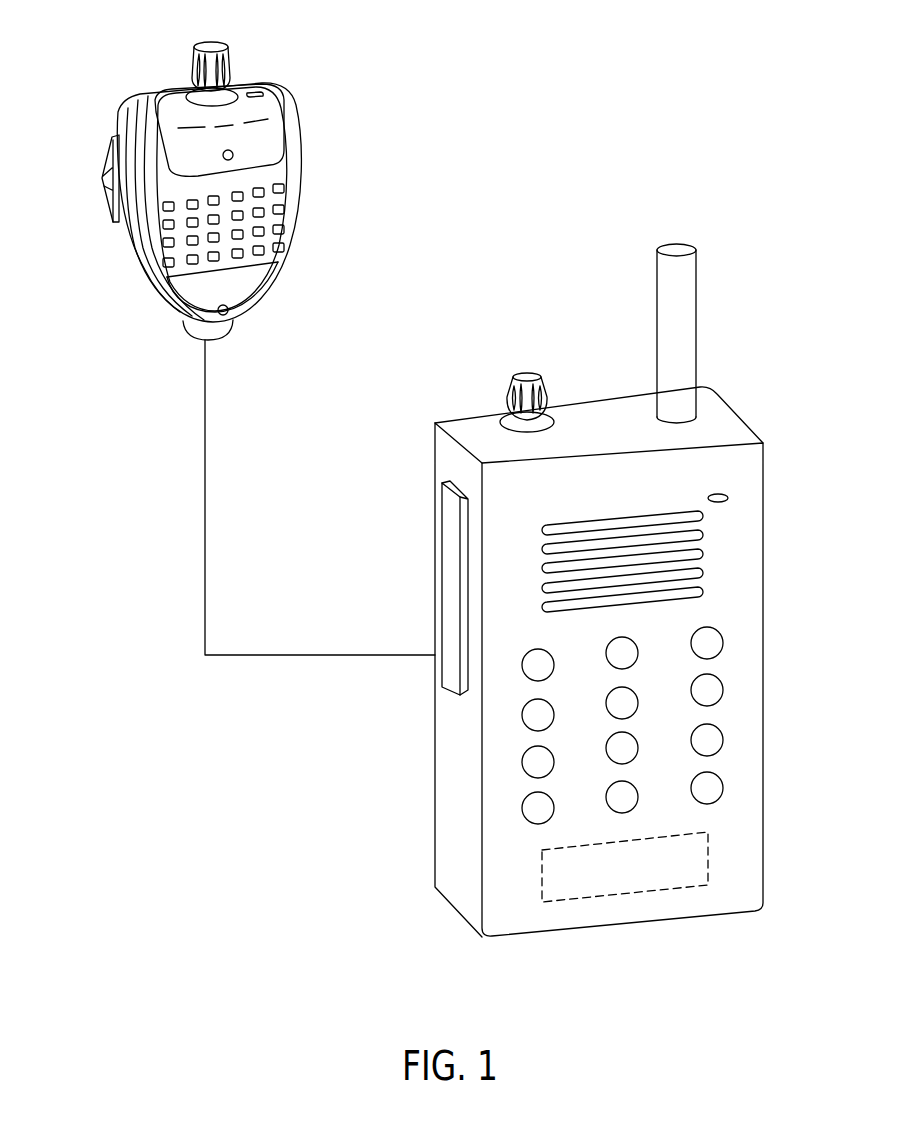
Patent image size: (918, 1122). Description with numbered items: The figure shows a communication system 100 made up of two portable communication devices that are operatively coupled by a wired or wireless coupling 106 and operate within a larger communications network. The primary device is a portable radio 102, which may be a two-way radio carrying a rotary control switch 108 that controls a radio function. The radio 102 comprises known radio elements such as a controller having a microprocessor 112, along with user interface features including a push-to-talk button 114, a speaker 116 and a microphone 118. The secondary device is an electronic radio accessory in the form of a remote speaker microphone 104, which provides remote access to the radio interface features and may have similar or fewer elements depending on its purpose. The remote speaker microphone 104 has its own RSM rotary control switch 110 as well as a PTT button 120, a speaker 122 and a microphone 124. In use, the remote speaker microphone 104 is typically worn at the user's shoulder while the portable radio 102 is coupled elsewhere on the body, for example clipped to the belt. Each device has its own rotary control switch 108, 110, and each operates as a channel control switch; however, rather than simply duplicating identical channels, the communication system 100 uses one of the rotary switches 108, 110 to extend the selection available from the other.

The communication system 100 is at (655, 96).
The portable radio 102 is at (763, 670).
The remote speaker microphone 104 is at (298, 123).
The coupling 106 is at (205, 497).
The rotary control switch 108 is at (528, 372).
The RSM rotary control switch 110 is at (212, 42).
The microprocessor 112 is at (708, 855).
The push-to-talk button 114 is at (451, 578).
The speaker 116 is at (622, 519).
The microphone 118 is at (728, 497).
The PTT button 120 is at (102, 181).
The speaker 122 is at (284, 230).
The microphone 124 is at (233, 155).